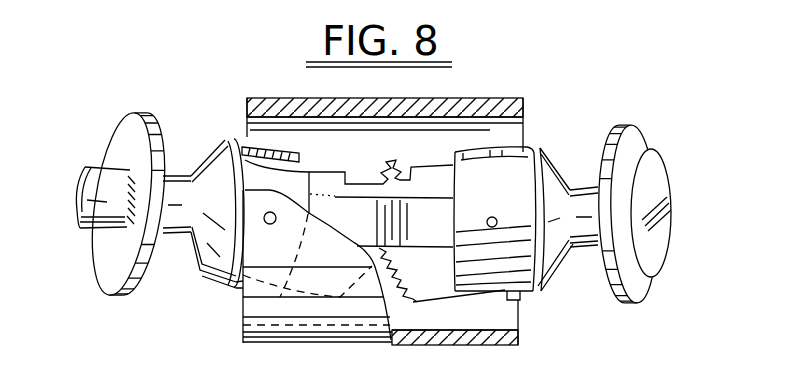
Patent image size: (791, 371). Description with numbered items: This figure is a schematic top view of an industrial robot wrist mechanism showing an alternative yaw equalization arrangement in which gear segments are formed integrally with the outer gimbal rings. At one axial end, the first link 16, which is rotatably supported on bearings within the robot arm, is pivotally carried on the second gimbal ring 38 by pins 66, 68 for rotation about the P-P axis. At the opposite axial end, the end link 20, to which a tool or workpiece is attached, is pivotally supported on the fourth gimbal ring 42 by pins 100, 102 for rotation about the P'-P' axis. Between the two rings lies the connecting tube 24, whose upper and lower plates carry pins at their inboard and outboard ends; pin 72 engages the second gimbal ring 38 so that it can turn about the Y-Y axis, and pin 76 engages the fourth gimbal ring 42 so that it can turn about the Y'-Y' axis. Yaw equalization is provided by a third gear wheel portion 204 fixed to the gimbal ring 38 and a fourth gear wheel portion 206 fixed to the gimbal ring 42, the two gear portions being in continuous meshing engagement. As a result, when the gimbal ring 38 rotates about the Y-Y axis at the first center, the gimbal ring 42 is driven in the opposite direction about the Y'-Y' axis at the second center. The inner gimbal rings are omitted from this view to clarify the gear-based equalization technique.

The first link 16 is at (196, 133).
The end link 20 is at (581, 147).
The connecting tube 24 is at (385, 209).
The second gimbal ring 38 is at (246, 146).
The fourth gimbal ring 42 is at (547, 293).
The pin 66 is at (241, 290).
The pin 68 is at (282, 157).
The pin 72 is at (270, 224).
The pin 76 is at (493, 217).
The pin 100 is at (514, 297).
The pin 102 is at (500, 150).
The third gear wheel portion 204 is at (354, 186).
The fourth gear wheel portion 206 is at (445, 284).